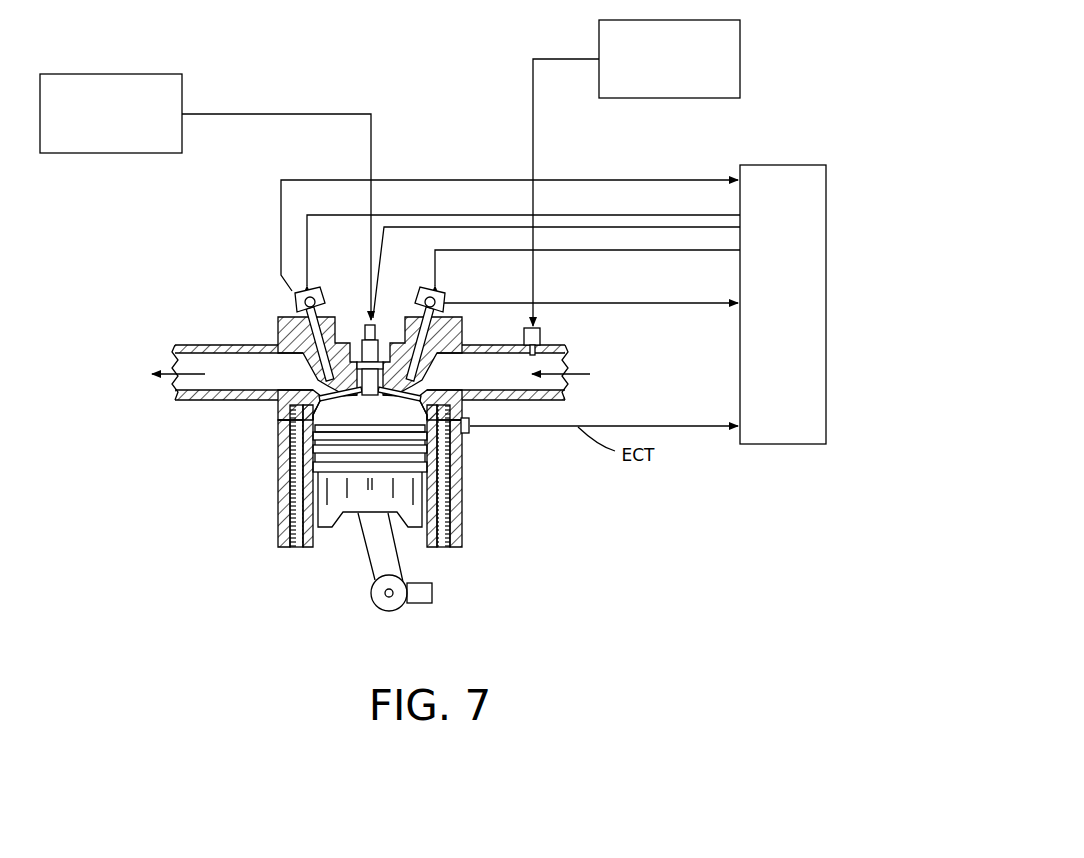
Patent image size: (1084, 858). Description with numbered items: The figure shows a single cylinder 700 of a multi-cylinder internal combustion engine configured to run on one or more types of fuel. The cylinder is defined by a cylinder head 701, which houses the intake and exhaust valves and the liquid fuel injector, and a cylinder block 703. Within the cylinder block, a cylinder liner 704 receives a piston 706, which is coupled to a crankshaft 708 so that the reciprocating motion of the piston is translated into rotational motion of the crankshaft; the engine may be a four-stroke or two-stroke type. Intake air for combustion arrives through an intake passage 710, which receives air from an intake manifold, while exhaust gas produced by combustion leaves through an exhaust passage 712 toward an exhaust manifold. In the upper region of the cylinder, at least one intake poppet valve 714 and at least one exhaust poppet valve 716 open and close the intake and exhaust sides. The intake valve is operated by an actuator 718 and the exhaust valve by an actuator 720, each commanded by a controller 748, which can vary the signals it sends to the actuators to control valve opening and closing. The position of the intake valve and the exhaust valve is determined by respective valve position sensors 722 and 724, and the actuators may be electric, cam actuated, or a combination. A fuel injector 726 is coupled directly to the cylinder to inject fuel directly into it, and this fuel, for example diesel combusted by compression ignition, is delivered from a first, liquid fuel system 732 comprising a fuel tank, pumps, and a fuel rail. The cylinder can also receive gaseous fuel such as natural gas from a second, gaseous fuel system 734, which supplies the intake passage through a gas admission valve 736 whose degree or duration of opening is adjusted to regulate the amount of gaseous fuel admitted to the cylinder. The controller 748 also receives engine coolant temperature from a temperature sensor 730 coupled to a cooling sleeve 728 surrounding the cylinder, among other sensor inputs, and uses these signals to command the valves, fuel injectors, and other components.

The cylinder 700 is at (370, 407).
The cylinder head 701 is at (226, 282).
The cylinder block 703 is at (507, 494).
The cylinder liner 704 is at (318, 533).
The piston 706 is at (353, 500).
The crankshaft 708 is at (404, 584).
The intake passage 710 is at (563, 372).
The exhaust passage 712 is at (176, 372).
The intake poppet valve 714 is at (418, 388).
The exhaust poppet valve 716 is at (330, 392).
The actuator 718 is at (422, 294).
The actuator 720 is at (311, 288).
The valve position sensor 722 is at (441, 300).
The valve position sensor 724 is at (297, 300).
The fuel injector 726 is at (365, 328).
The cooling sleeve 728 is at (445, 500).
The temperature sensor 730 is at (470, 430).
The liquid fuel system 732 is at (205, 197).
The gaseous fuel system 734 is at (636, 173).
The gas admission valve 736 is at (541, 334).
The controller 748 is at (553, 304).